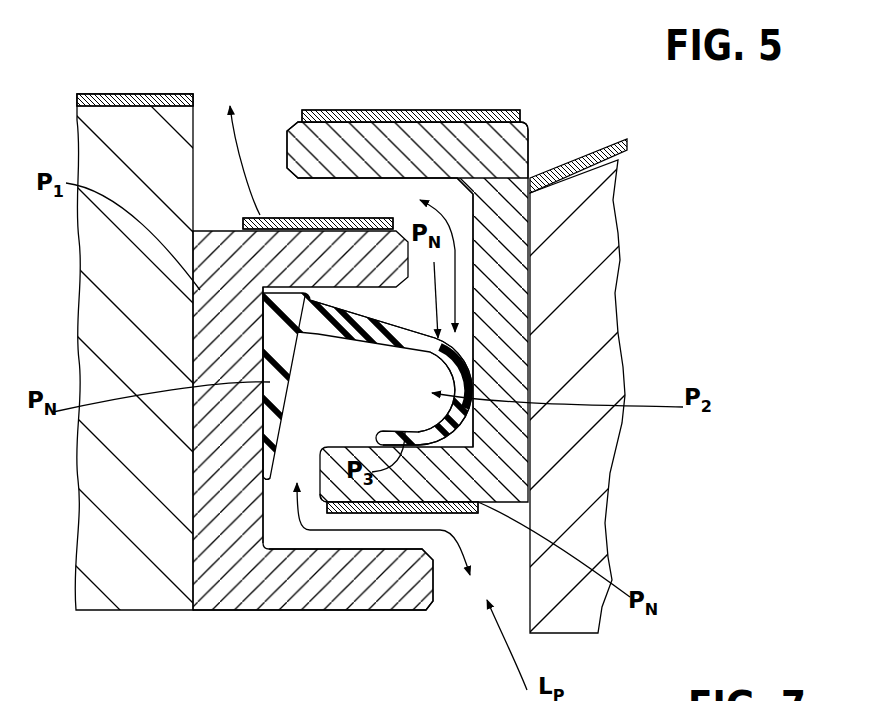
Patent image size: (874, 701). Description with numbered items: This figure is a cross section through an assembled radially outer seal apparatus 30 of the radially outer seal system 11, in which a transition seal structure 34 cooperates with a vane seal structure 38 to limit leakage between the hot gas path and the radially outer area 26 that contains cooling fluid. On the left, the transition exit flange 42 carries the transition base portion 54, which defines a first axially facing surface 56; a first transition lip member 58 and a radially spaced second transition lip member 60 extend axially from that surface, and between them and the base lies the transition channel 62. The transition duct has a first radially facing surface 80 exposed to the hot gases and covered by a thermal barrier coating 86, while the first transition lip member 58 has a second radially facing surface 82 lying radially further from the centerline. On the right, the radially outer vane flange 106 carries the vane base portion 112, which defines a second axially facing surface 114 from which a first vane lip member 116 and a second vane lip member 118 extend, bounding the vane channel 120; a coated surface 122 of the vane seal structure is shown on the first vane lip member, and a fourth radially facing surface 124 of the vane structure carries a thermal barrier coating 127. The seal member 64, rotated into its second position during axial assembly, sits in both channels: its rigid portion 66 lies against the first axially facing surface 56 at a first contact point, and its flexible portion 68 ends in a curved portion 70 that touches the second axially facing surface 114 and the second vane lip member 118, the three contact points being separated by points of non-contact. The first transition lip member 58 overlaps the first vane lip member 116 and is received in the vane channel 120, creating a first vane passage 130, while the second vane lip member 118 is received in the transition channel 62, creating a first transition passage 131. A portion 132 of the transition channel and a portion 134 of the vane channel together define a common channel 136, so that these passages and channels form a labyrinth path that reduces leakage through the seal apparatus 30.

The radially outer seal system 11 is at (405, 660).
The radially outer area 26 is at (222, 676).
The radially outer seal apparatus 30 is at (335, 58).
The transition seal structure 34 is at (432, 614).
The vane seal structure 38 is at (290, 118).
The transition exit flange 42 is at (92, 387).
The transition base portion 54 is at (213, 317).
The first axially facing surface 56 is at (250, 545).
The first transition lip member 58 is at (317, 263).
The second transition lip member 60 is at (322, 585).
The transition channel 62 is at (303, 446).
The seal member 64 is at (390, 360).
The rigid portion 66 is at (270, 355).
The flexible portion 68 is at (458, 437).
The curved portion 70 is at (392, 428).
The first radially facing surface 80 is at (122, 95).
The second radially facing surface 82 is at (345, 195).
The thermal barrier coating 86 is at (137, 97).
The radially outer vane flange 106 is at (605, 375).
The vane base portion 112 is at (540, 335).
The second axially facing surface 114 is at (470, 258).
The first vane lip member 116 is at (409, 137).
The second vane lip member 118 is at (467, 440).
The vane channel 120 is at (427, 318).
The coating 122 is at (342, 112).
The fourth radially facing surface 124 is at (620, 140).
The thermal barrier coating 127 is at (568, 160).
The first vane passage 130 is at (393, 202).
The first transition passage 131 is at (420, 541).
The portion of the transition channel 132 is at (297, 408).
The portion of the vane channel 134 is at (468, 421).
The common channel 136 is at (414, 366).